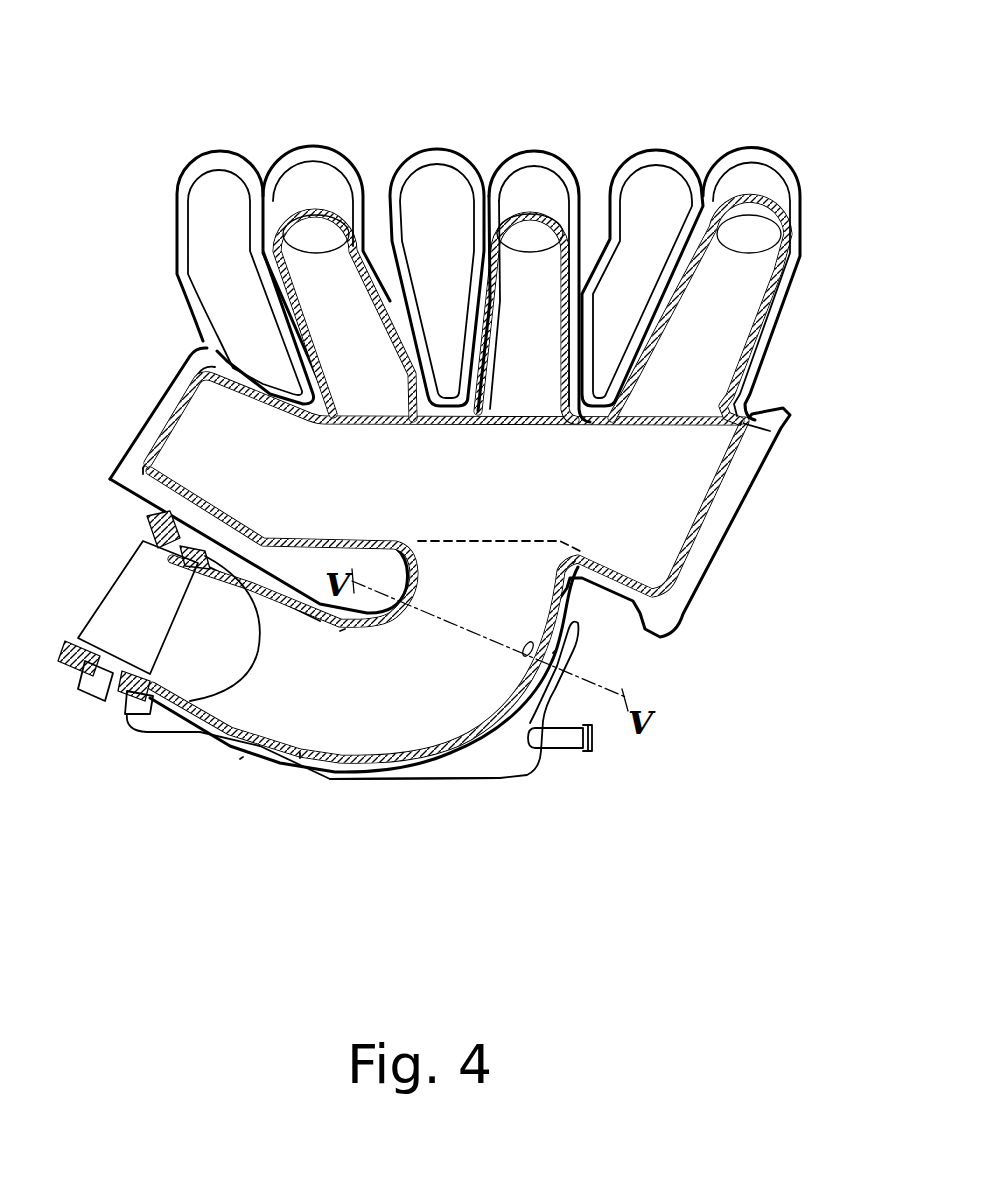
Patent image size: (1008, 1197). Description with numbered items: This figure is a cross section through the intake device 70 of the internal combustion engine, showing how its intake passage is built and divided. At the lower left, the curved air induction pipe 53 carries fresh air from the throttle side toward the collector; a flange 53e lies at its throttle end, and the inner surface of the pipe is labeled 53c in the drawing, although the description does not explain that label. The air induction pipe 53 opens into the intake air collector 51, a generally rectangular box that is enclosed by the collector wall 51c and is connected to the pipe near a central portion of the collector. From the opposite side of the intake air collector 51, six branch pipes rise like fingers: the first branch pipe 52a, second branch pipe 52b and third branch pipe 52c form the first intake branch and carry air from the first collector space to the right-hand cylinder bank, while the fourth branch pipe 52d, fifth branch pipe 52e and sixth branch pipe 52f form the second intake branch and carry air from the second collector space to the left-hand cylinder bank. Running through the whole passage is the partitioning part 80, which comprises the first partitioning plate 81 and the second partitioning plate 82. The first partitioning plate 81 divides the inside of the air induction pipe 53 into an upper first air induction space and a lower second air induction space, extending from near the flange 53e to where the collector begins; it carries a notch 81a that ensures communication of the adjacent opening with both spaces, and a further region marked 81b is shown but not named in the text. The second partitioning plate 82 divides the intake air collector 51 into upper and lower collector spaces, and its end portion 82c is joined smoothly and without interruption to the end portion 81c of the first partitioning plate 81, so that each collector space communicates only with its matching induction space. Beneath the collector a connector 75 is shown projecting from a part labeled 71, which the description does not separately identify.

The intake air collector 51 is at (828, 478).
The collector wall 51c is at (210, 500).
The first branch pipe 52a is at (757, 190).
The second branch pipe 52b is at (532, 190).
The third branch pipe 52c is at (310, 187).
The fourth branch pipe 52d is at (662, 187).
The fifth branch pipe 52e is at (440, 197).
The sixth branch pipe 52f is at (220, 183).
The air induction pipe 53 is at (223, 840).
The inner surface of lower cover 53c is at (340, 633).
The flange 53e is at (73, 673).
The intake device 70 is at (490, 853).
The bracket plate 71 is at (490, 780).
The connector 75 is at (573, 750).
The partitioning part 80 is at (353, 870).
The first partitioning plate 81 is at (357, 762).
The notch 81a is at (524, 638).
The liner curved wall 81b is at (260, 677).
The end portion of the first partitioning plate 81c is at (433, 557).
The second partitioning plate 82 is at (667, 540).
The end portion of the second partitioning plate 82c is at (500, 530).